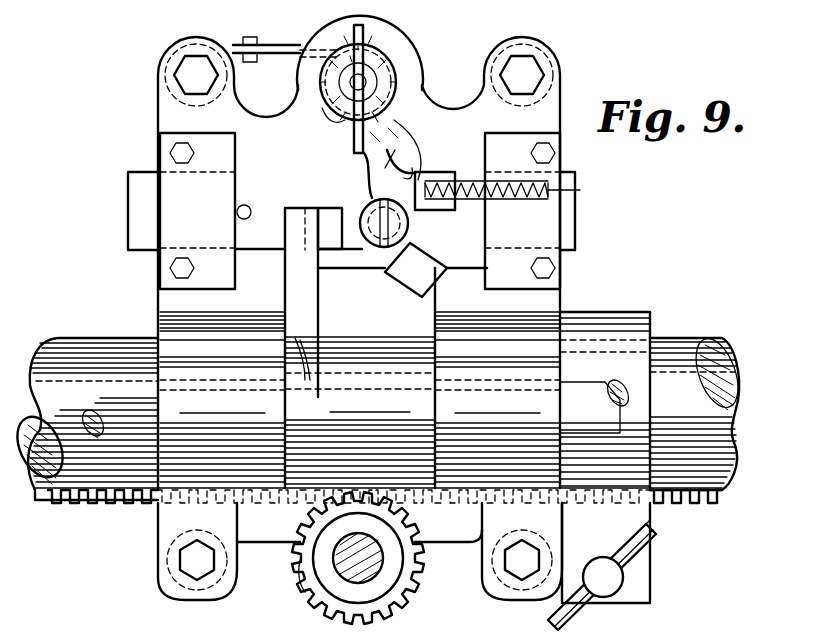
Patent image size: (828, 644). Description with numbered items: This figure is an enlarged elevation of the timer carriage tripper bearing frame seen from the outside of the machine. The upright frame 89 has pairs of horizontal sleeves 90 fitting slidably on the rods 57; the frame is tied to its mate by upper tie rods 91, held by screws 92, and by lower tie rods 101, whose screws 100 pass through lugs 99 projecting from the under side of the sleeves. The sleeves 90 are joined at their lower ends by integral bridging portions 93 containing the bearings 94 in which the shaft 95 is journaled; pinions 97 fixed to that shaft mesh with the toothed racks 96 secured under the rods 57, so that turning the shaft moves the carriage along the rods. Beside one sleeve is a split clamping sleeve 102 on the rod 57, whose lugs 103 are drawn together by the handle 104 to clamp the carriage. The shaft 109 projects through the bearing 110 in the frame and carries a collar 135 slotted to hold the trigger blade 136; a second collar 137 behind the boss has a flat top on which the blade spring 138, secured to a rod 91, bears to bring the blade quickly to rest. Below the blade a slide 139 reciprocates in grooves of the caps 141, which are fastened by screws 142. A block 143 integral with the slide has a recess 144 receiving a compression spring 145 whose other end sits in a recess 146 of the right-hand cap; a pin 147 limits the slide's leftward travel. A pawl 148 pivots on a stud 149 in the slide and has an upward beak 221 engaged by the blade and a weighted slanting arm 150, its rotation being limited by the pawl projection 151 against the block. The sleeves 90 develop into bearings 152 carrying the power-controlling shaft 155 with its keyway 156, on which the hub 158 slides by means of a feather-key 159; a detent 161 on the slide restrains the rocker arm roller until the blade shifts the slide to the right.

The rods 57 is at (700, 347).
The upright frame 89 is at (170, 118).
The horizontal sleeves 90 is at (168, 328).
The tie rods 91 is at (175, 68).
The screws 92 is at (359, 75).
The bridging portions 93 is at (359, 528).
The bearings 94 is at (380, 585).
The shaft 95 is at (360, 570).
The toothed racks 96 is at (110, 500).
The pinions 97 is at (312, 590).
The lugs 99 is at (170, 522).
The screws 100 is at (359, 560).
The tie rods 101 is at (182, 576).
The split clamping sleeve 102 is at (625, 318).
The lugs 103 is at (606, 553).
The handle 104 is at (655, 542).
The shaft 109 is at (398, 78).
The bearing 110 is at (392, 40).
The collar 135 is at (330, 80).
The trigger or blade 136 is at (398, 98).
The collar 137 is at (333, 120).
The blade spring 138 is at (304, 38).
The slide 139 is at (361, 334).
The caps 141 is at (351, 211).
The screws 142 is at (175, 153).
The block 143 is at (413, 150).
The recess 144 is at (443, 181).
The compression spring 145 is at (466, 202).
The recess 146 is at (575, 190).
The pin 147 is at (246, 205).
The pawl 148 is at (399, 153).
The stud 149 is at (378, 245).
The downwardly slanting arm 150 is at (416, 270).
The pawl projection 151 is at (420, 164).
The bearings 152 is at (360, 411).
The shaft 155 is at (108, 401).
The keyway 156 is at (368, 385).
The hub 158 is at (360, 410).
The feather-key 159 is at (300, 335).
The detent 161 is at (328, 215).
The beak 221 is at (362, 162).